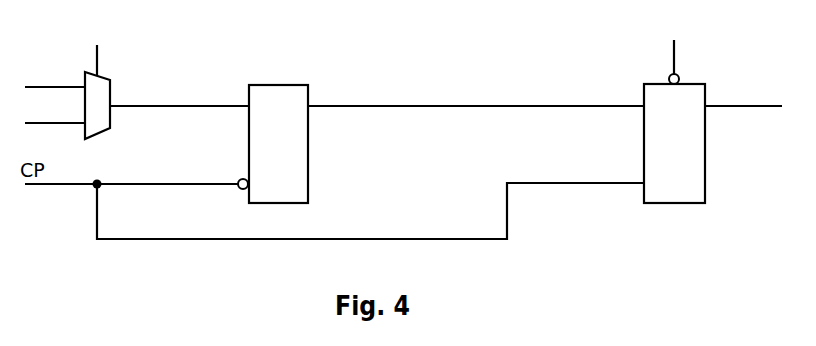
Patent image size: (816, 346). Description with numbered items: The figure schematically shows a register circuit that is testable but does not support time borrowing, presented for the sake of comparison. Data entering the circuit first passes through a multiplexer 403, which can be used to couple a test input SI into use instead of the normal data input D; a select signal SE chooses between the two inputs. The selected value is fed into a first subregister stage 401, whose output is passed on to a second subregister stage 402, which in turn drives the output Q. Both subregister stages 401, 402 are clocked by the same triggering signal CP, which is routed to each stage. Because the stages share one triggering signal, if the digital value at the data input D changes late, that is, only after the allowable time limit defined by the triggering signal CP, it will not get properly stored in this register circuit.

The subregister stage 401 is at (308, 168).
The subregister stage 402 is at (705, 175).
The multiplexer 403 is at (110, 118).